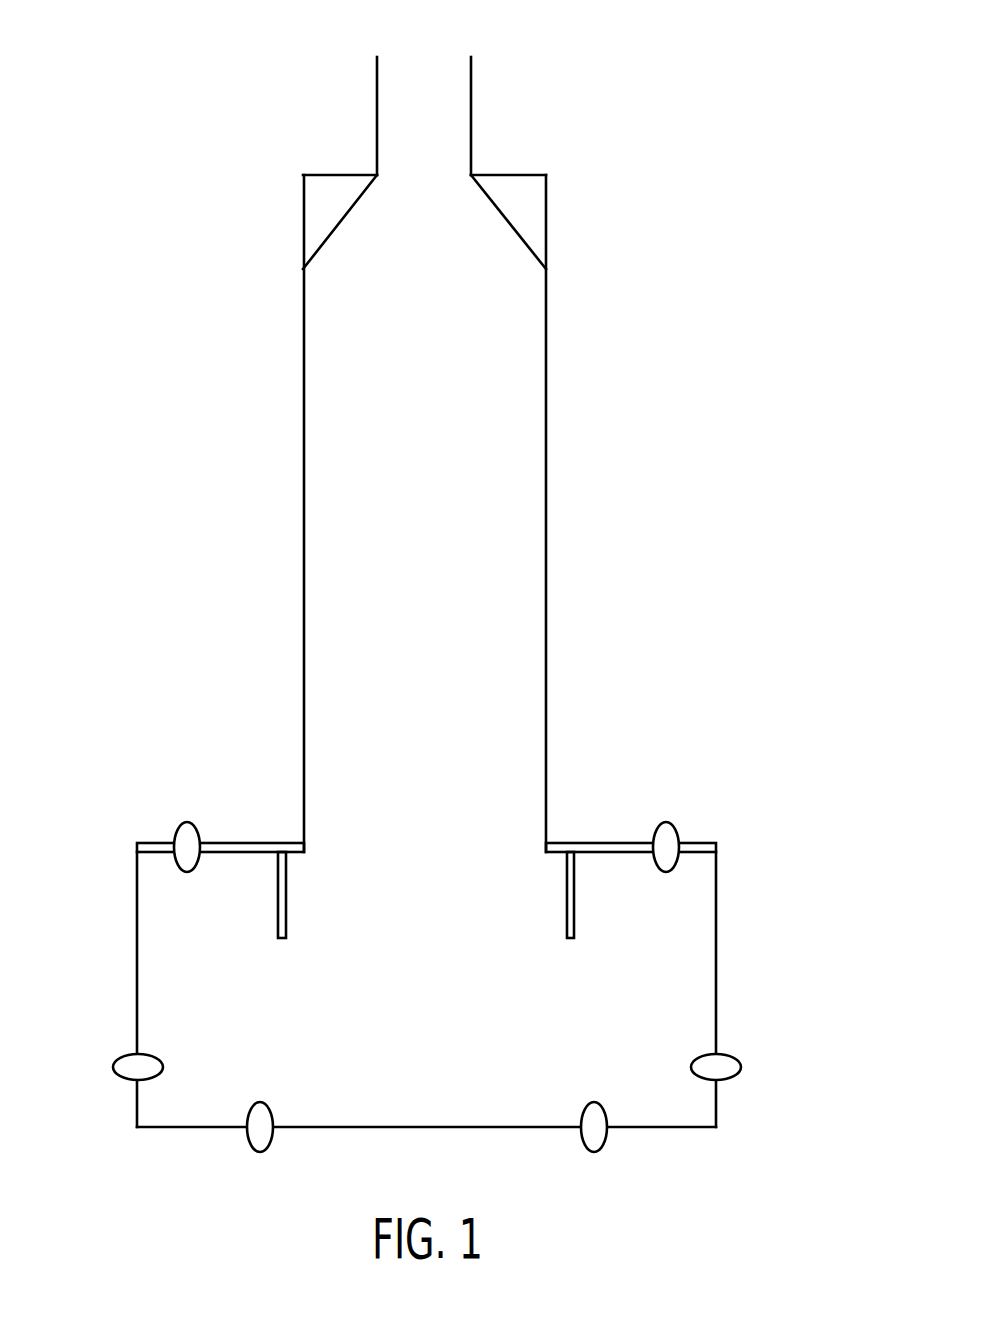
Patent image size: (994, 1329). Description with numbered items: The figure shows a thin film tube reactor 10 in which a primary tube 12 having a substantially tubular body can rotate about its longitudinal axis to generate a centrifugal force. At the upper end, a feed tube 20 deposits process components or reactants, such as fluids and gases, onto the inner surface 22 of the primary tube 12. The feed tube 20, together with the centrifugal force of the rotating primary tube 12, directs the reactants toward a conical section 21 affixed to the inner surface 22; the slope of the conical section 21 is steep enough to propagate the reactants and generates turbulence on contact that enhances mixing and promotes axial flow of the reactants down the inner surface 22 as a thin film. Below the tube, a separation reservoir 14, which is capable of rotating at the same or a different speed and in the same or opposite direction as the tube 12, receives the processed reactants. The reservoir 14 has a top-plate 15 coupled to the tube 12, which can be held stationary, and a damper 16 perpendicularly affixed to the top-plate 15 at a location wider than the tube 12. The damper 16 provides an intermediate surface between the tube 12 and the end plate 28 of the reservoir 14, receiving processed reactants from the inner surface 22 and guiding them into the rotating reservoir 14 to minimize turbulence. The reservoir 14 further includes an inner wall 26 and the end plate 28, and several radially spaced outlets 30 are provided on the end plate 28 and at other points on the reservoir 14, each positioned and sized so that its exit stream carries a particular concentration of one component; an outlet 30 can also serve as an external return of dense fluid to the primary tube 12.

The tube reactor 10 is at (618, 67).
The primary tube 12 is at (304, 448).
The separation reservoir 14 is at (716, 968).
The top-plate 15 is at (242, 841).
The damper 16 is at (286, 905).
The feed tube 20 is at (473, 83).
The conical section 21 is at (333, 228).
The inner surface 22 is at (546, 478).
The inner wall 26 is at (140, 1005).
The end plate 28 is at (447, 1126).
The outlets 30 is at (187, 822).